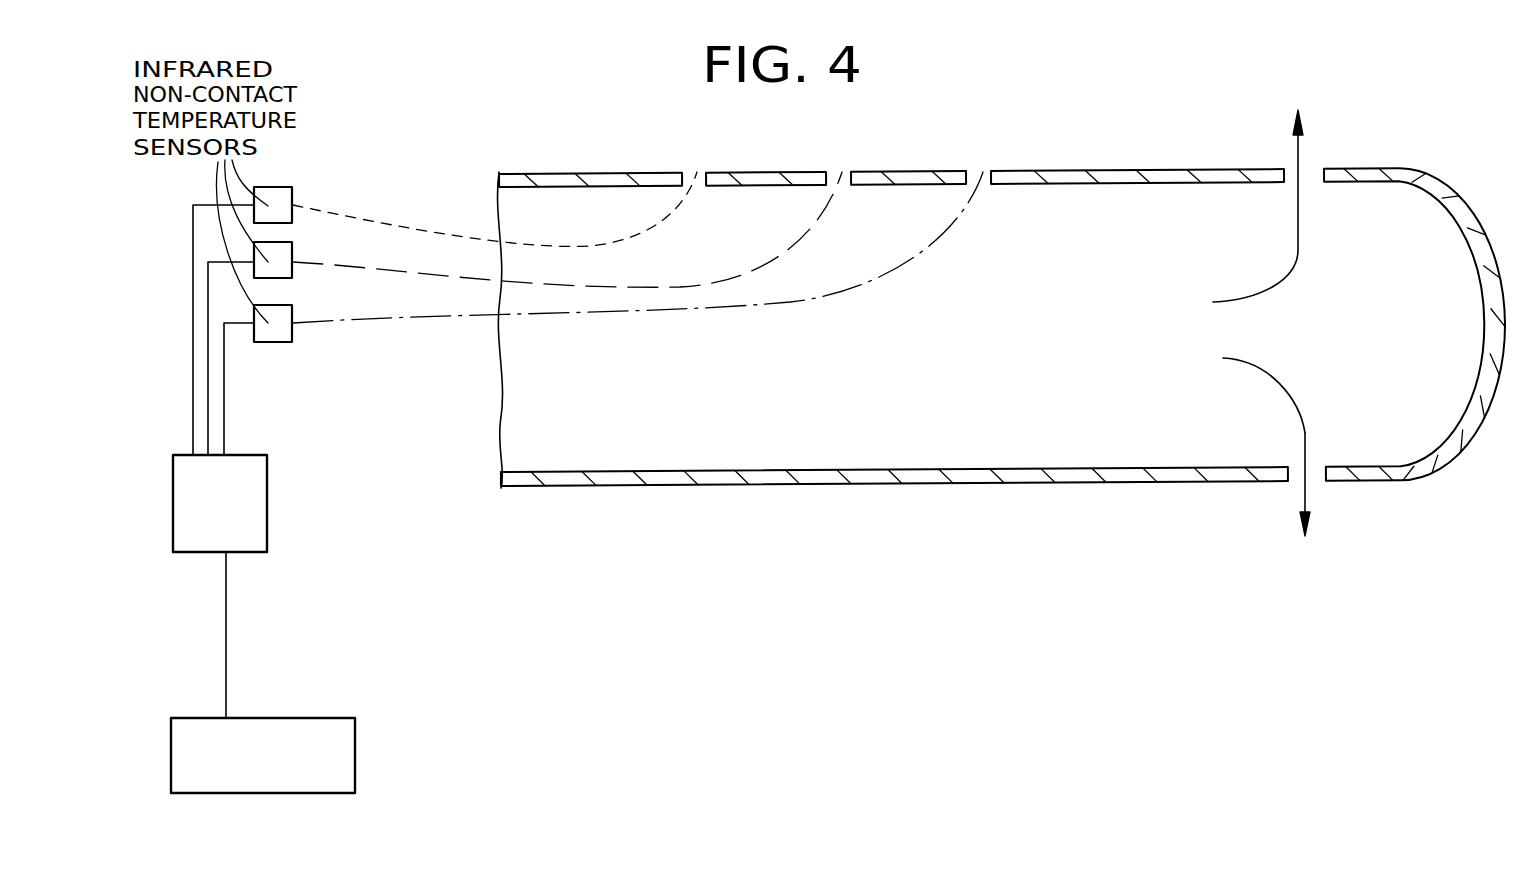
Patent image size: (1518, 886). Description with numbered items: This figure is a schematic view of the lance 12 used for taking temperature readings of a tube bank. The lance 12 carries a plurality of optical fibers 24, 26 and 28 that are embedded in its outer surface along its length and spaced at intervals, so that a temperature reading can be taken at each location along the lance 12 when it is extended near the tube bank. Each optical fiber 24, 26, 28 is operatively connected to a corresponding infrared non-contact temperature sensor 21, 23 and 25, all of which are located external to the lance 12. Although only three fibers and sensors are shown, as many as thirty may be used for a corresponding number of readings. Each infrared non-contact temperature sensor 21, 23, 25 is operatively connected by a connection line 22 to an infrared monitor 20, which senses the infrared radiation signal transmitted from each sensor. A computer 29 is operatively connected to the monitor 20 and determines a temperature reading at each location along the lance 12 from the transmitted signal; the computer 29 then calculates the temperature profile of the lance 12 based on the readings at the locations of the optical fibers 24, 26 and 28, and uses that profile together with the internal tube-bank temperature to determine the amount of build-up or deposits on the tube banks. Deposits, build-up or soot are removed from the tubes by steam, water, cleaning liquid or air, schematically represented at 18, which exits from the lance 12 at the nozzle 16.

The lance 12 is at (907, 485).
The nozzle 16 is at (1310, 178).
The steam, water, cleaning liquid or air 18 is at (1283, 383).
The infrared monitor 20 is at (255, 507).
The infrared non-contact temperature sensor 21 is at (278, 197).
The connection line 22 is at (193, 303).
The infrared non-contact temperature sensor 23 is at (283, 258).
The optical fiber 24 is at (613, 240).
The infrared non-contact temperature sensor 25 is at (283, 321).
The optical fiber 26 is at (793, 248).
The optical fiber 28 is at (917, 267).
The computer 29 is at (282, 732).